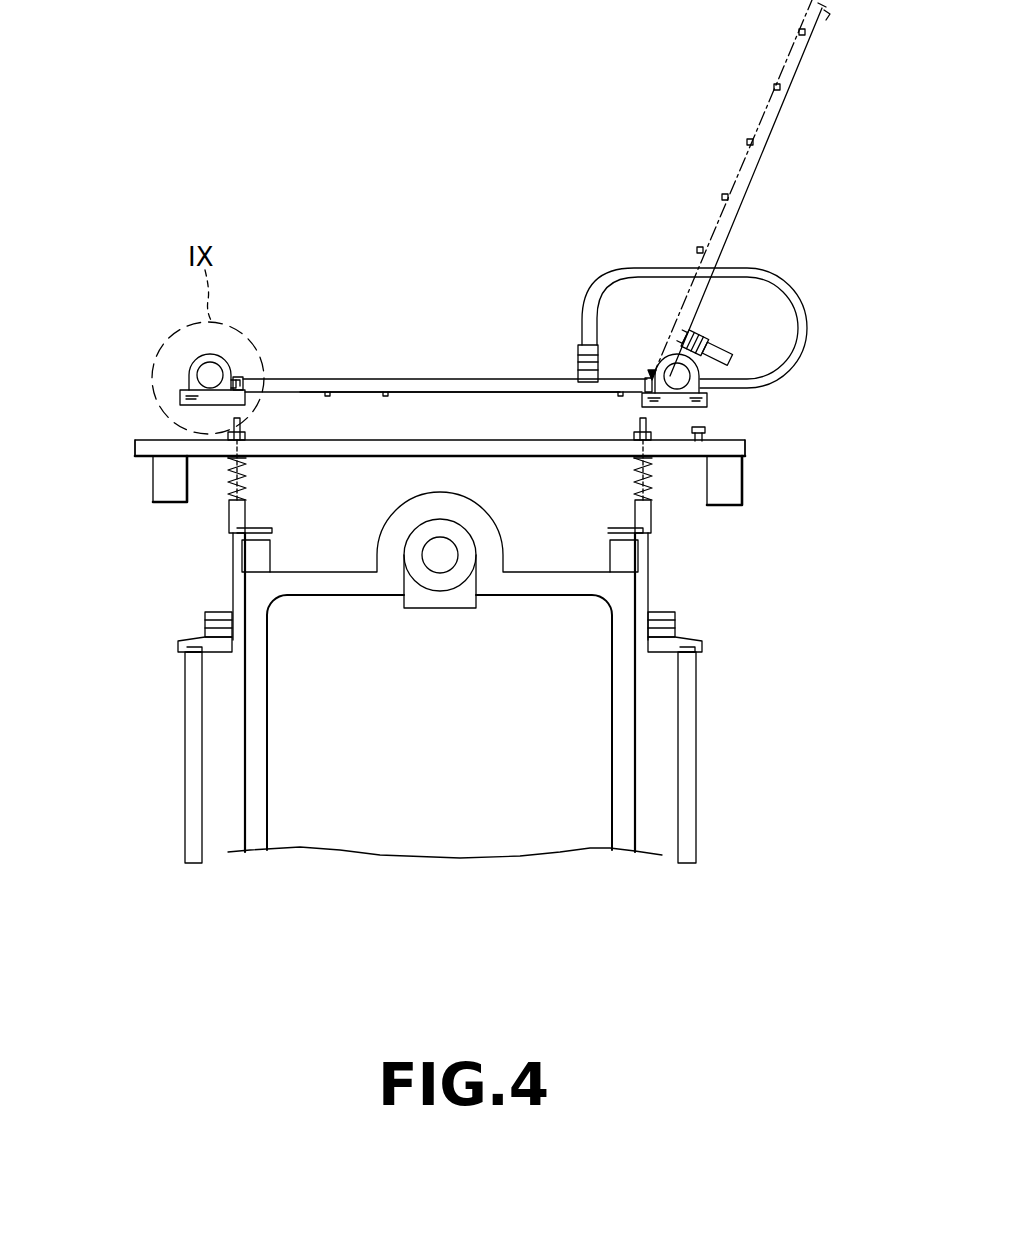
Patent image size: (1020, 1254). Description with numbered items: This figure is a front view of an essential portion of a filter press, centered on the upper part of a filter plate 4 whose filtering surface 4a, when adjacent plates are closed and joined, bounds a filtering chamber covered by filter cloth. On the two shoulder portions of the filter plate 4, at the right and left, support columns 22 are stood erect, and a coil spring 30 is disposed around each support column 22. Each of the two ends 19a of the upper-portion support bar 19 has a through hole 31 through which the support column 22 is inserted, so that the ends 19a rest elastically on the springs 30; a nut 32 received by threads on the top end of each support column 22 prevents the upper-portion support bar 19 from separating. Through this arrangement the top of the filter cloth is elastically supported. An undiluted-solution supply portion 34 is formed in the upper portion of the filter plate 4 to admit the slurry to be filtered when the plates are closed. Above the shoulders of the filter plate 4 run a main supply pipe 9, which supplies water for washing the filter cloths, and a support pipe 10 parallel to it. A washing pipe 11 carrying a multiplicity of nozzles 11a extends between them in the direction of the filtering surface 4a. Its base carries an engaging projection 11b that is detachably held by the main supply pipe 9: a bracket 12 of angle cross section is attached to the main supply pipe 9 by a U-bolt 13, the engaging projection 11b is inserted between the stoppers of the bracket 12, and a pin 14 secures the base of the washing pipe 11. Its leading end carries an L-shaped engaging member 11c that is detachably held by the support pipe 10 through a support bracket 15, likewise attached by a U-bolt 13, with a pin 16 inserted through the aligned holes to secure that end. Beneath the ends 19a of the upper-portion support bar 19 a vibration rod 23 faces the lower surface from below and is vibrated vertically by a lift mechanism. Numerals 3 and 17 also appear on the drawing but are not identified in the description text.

The leg 3 is at (190, 757).
The filter plate 4 is at (258, 832).
The filtering surface 4a is at (340, 828).
The main supply pipe 9 is at (728, 376).
The support pipe 10 is at (205, 370).
The washing pipe 11 is at (753, 178).
The nozzle 11a is at (496, 390).
The engaging projection 11b is at (648, 376).
The engaging member 11c is at (256, 380).
The bracket 12 is at (708, 401).
The U-bolt 13 is at (178, 372).
The pin 14 is at (645, 377).
The support bracket 15 is at (212, 400).
The pin 16 is at (240, 378).
The hose 17 is at (668, 268).
The upper-portion support bar 19 is at (460, 452).
The end of the upper-portion support bar 19a is at (153, 464).
The support column 22 is at (245, 432).
The vibration rod 23 is at (168, 488).
The coil spring 30 is at (262, 484).
The through hole 31 is at (232, 460).
The nut 32 is at (245, 448).
The undiluted-solution supply portion 34 is at (415, 600).